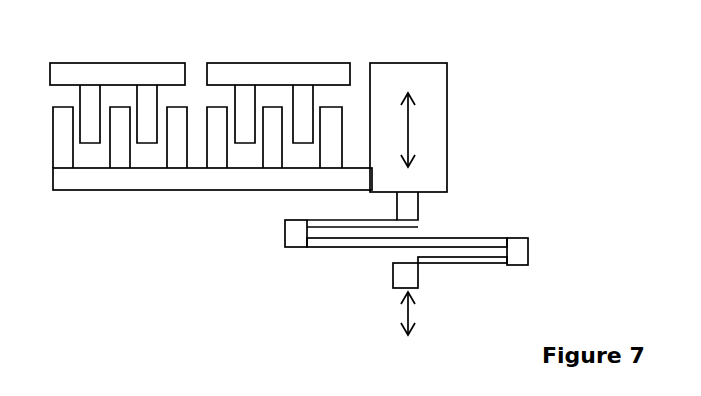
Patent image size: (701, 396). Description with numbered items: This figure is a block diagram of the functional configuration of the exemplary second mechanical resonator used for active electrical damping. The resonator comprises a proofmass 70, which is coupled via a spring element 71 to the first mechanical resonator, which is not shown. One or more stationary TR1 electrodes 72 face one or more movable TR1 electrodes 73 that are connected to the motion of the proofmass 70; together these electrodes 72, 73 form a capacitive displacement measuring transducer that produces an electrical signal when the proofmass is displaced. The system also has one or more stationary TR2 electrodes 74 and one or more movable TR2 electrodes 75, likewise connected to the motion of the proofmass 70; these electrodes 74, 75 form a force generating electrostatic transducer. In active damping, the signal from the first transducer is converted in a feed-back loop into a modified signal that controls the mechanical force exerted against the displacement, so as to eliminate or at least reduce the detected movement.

The proofmass 70 is at (397, 63).
The spring element 71 is at (467, 238).
The stationary TR1 electrodes 72 is at (112, 63).
The movable TR1 electrodes 73 is at (140, 190).
The stationary TR2 electrodes 74 is at (277, 63).
The movable TR2 electrodes 75 is at (270, 190).